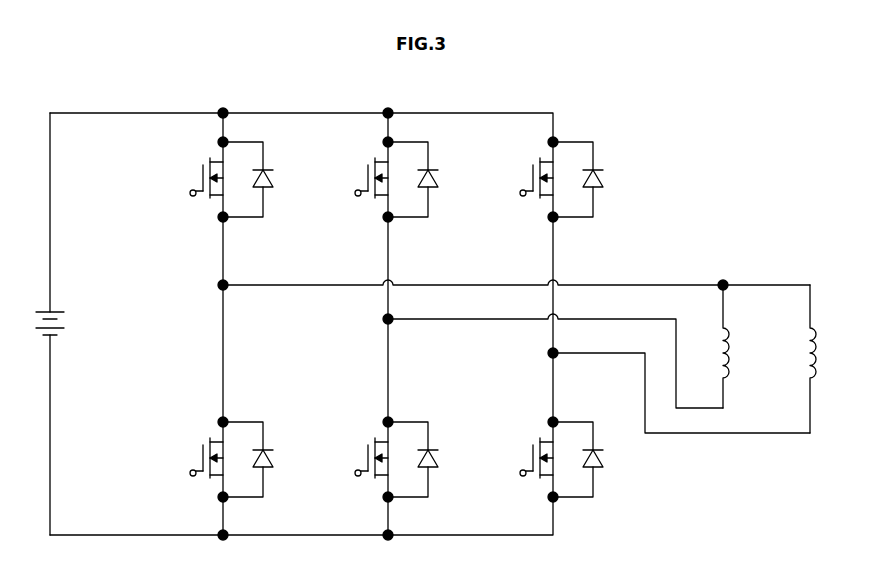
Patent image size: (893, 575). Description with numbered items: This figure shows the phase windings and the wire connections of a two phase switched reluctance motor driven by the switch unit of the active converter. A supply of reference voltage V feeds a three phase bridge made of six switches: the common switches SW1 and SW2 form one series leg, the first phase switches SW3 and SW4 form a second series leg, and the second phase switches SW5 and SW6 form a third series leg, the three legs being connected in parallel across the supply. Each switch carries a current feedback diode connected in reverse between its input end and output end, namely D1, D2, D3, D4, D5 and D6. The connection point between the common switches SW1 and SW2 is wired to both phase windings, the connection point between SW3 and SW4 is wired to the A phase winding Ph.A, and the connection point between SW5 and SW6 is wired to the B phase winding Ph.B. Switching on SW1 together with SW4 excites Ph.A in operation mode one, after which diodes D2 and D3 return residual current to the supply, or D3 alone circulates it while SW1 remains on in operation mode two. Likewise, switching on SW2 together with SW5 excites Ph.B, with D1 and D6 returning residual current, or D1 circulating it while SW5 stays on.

The reference voltage V is at (44, 324).
The upper common switch SW1 is at (202, 178).
The lower common switch SW2 is at (202, 458).
The upper first phase switch SW3 is at (367, 178).
The lower first phase switch SW4 is at (367, 458).
The upper second phase switch SW5 is at (532, 178).
The lower second phase switch SW6 is at (532, 458).
The current feedback diode D1 is at (263, 179).
The current feedback diode D2 is at (263, 459).
The current feedback diode D3 is at (428, 179).
The current feedback diode D4 is at (428, 459).
The current feedback diode D5 is at (593, 179).
The current feedback diode D6 is at (593, 459).
The A phase winding Ph.A is at (750, 346).
The B phase winding Ph.B is at (837, 359).